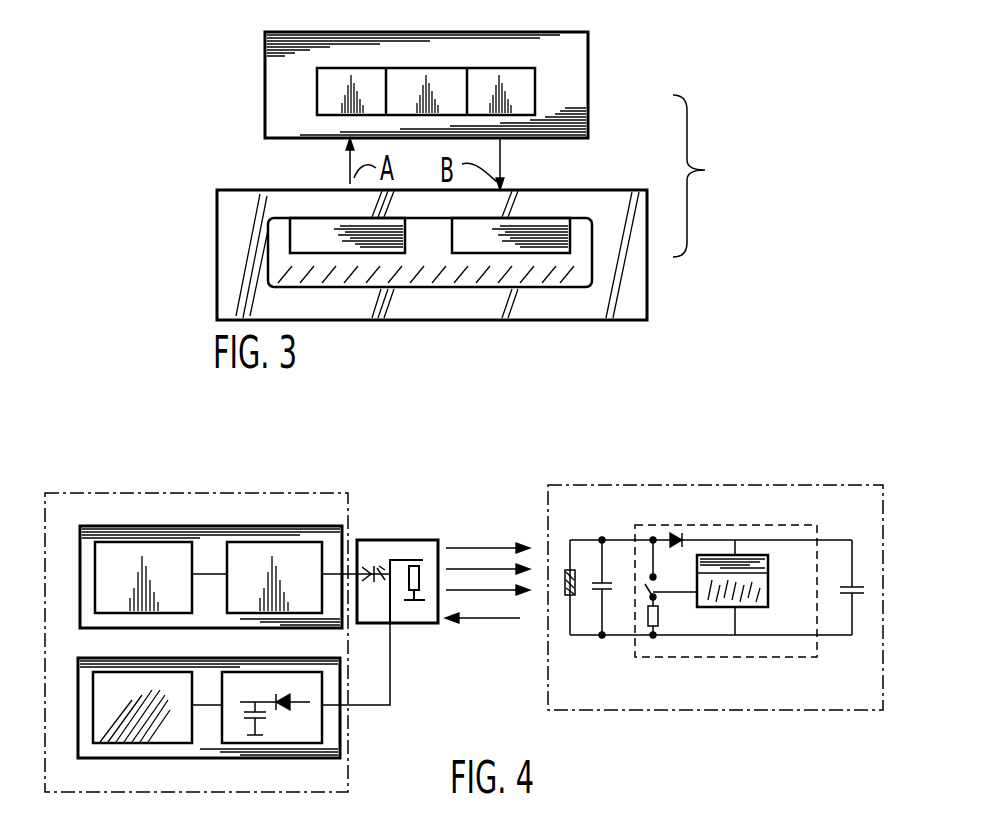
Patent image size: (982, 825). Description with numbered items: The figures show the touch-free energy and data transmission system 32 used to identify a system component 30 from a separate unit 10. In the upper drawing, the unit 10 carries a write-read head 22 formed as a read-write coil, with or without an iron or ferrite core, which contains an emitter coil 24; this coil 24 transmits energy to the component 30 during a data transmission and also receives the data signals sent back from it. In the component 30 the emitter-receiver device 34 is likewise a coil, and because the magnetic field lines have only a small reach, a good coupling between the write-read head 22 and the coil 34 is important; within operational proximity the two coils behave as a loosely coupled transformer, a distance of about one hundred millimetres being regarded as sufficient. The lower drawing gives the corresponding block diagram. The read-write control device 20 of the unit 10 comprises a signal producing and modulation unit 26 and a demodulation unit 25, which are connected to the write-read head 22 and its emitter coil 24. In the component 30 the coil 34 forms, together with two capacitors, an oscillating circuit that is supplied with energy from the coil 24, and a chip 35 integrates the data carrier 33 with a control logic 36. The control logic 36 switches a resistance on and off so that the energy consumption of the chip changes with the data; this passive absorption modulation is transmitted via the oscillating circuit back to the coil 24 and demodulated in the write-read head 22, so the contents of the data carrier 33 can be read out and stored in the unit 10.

In FIG. 3, the unit 10 is at (234, 236).
In FIG. 4, the read-write control device 20 is at (90, 512).
In FIG. 3, the write-read head 22 is at (575, 264).
In FIG. 4, the write-read head 22 is at (370, 556).
In FIG. 3, the emitter coil 24 is at (316, 226).
In FIG. 4, the emitter coil 24 is at (427, 576).
In FIG. 4, the demodulation unit 25 is at (103, 692).
In FIG. 4, the signal producing and modulation unit 26 is at (204, 536).
In FIG. 3, the system component 30 is at (268, 88).
In FIG. 4, the system component 30 is at (550, 658).
In FIG. 3, the touch-free energy and data transmission system 32 is at (703, 176).
In FIG. 4, the data carrier 33 is at (745, 555).
In FIG. 3, the emitter-receiver device 34 is at (524, 92).
In FIG. 4, the emitter-receiver device 34 is at (562, 578).
In FIG. 4, the chip 35 is at (655, 527).
In FIG. 4, the control logic 36 is at (755, 603).